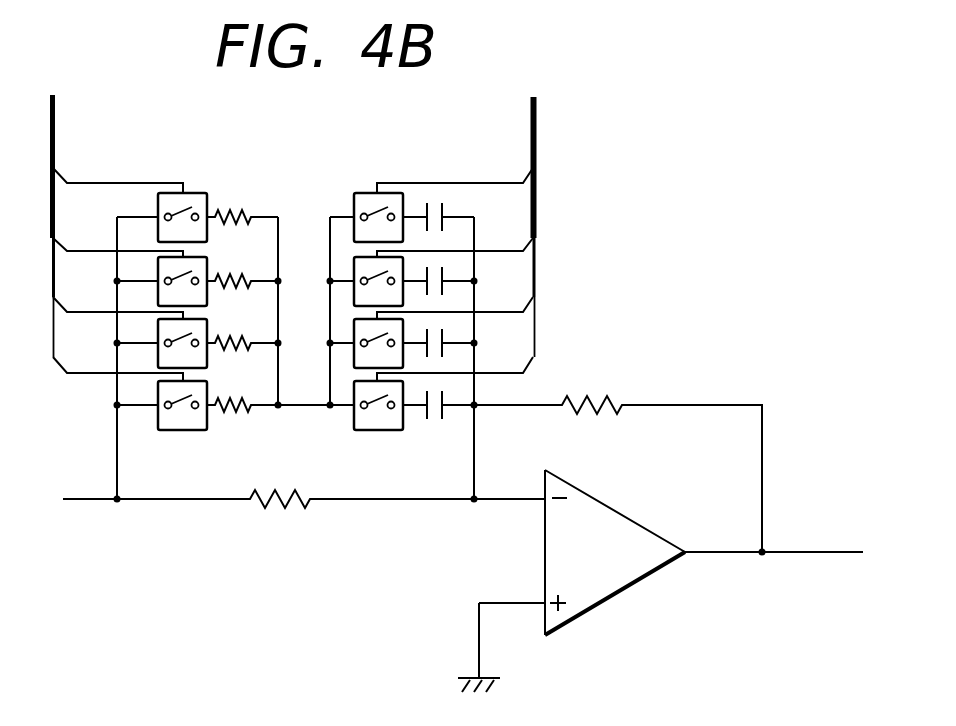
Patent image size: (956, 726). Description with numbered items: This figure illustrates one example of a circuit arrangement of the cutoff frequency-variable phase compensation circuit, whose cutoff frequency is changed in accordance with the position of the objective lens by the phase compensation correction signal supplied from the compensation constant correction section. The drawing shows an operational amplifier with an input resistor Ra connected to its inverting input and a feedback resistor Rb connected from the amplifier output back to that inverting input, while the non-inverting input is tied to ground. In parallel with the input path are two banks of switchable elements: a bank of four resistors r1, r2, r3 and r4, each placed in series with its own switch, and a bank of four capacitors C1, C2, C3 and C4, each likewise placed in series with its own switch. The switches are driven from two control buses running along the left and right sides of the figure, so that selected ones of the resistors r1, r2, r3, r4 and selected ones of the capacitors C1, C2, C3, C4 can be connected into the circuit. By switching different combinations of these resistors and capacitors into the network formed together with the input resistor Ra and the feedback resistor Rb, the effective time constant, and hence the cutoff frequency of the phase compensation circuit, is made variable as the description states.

The resistor r1 is at (242, 392).
The resistor r2 is at (242, 331).
The resistor r3 is at (242, 269).
The resistor r4 is at (242, 204).
The capacitor C1 is at (440, 399).
The capacitor C2 is at (440, 337).
The capacitor C3 is at (440, 275).
The capacitor C4 is at (440, 211).
The input resistor Ra is at (304, 517).
The feedback resistor Rb is at (618, 461).